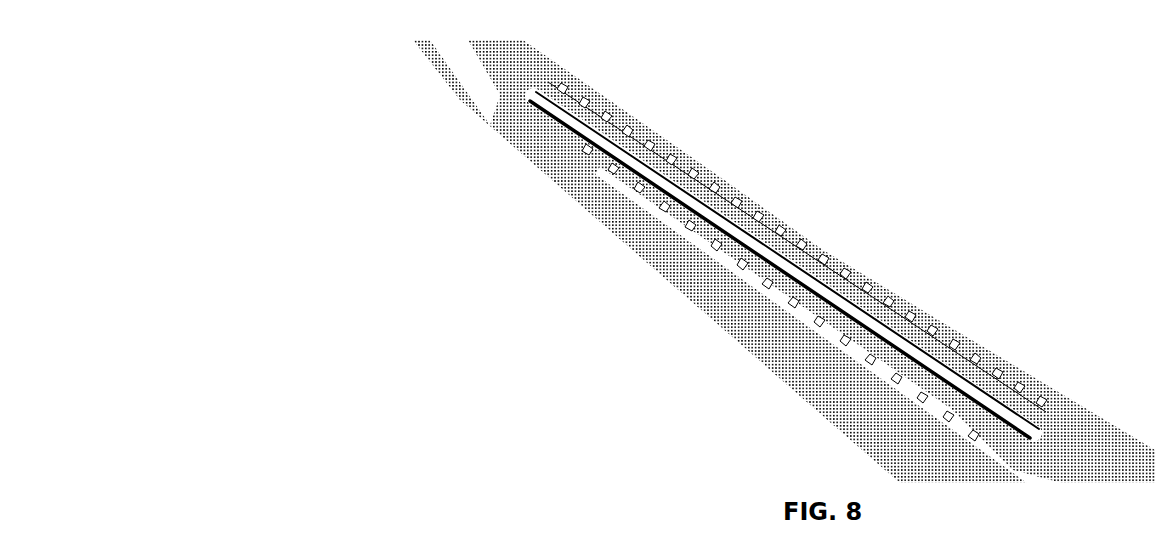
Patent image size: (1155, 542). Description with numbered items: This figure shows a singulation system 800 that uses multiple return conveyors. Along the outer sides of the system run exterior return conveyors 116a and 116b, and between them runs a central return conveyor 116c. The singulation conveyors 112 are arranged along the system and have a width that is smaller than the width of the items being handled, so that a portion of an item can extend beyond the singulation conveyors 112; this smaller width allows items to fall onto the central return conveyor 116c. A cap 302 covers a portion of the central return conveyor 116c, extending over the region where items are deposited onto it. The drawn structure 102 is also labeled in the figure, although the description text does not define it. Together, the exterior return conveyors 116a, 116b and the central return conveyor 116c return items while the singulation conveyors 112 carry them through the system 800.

The singulation system 800 is at (734, 261).
The housing 102 is at (784, 261).
The singulation conveyors 112 is at (618, 140).
The cap 302 is at (582, 130).
The exterior return conveyor 116a is at (947, 335).
The exterior return conveyor 116b is at (757, 320).
The central return conveyor 116c is at (748, 252).